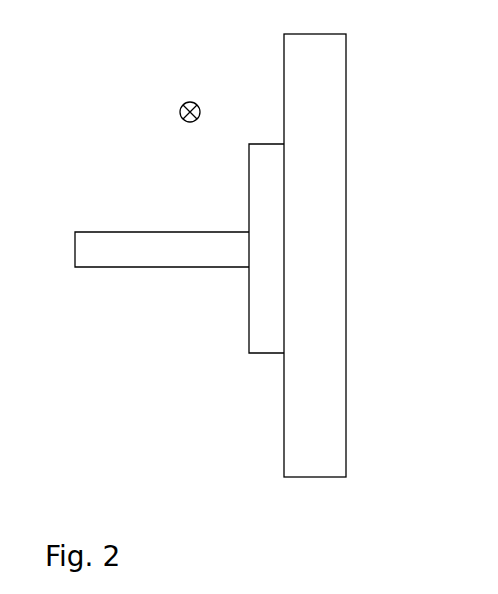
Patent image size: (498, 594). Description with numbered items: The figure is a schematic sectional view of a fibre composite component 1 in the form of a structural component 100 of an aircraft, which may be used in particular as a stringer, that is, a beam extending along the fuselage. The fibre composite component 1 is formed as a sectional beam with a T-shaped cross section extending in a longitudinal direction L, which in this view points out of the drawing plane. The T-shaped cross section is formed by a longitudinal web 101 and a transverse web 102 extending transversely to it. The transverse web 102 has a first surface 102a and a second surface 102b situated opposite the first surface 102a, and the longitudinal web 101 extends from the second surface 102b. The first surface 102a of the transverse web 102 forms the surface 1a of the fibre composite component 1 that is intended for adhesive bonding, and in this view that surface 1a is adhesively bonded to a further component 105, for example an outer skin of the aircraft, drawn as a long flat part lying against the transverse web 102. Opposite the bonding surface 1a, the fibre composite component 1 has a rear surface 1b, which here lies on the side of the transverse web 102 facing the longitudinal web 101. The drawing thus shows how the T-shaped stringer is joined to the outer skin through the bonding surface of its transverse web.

The fibre composite component 1 is at (112, 280).
The structural component 100 is at (112, 280).
The surface 1a is at (285, 313).
The rear surface 1b is at (249, 217).
The longitudinal web 101 is at (92, 240).
The transverse web 102 is at (261, 138).
The first surface 102a is at (285, 235).
The second surface 102b is at (248, 338).
The further component 105 is at (347, 82).
The longitudinal direction L is at (192, 100).